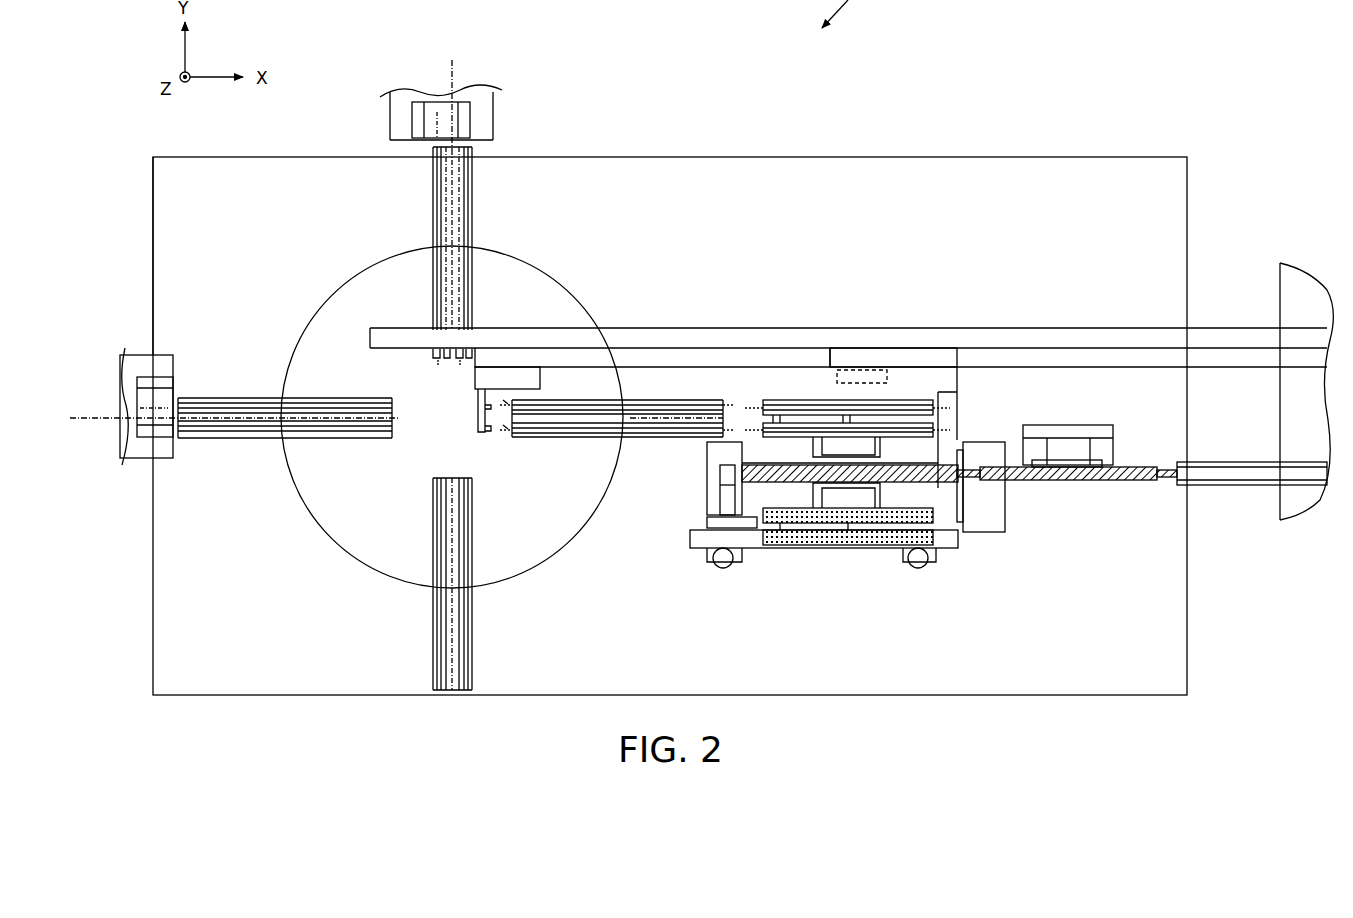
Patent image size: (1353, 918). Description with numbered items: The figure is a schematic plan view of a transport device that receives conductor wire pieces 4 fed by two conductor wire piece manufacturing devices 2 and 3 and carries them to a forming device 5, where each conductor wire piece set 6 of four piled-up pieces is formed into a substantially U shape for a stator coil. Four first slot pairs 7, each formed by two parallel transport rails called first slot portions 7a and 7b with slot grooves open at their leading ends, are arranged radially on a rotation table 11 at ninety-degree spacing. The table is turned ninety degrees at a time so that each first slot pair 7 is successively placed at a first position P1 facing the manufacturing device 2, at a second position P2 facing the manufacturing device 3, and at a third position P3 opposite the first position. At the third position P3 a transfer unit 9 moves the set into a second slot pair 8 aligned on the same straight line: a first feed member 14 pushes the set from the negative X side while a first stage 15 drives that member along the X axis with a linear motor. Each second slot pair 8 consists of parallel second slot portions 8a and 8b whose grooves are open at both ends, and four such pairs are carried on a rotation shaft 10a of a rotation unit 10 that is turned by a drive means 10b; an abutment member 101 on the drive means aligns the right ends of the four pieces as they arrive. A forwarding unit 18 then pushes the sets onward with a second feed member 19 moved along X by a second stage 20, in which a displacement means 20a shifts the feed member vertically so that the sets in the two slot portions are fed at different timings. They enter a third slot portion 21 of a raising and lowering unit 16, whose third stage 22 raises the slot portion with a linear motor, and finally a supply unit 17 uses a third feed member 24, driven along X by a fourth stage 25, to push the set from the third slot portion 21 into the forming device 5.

The conductor wire piece manufacturing device 2 is at (122, 468).
The conductor wire piece manufacturing device 3 is at (516, 100).
The conductor wire piece 4 is at (443, 120).
The forming device 5 is at (1272, 242).
The conductor wire piece set 6 is at (472, 258).
The first slot pair 7 is at (501, 256).
The first slot portion 7a is at (470, 225).
The first slot portion 7b is at (455, 192).
The second slot pair 8 is at (806, 300).
The second slot portion 8a is at (793, 400).
The second slot portion 8b is at (823, 423).
The transfer unit 9 is at (466, 410).
The rotation unit 10 is at (985, 539).
The rotation shaft 10a is at (888, 482).
The drive means 10b is at (1000, 533).
The rotation table 11 is at (324, 302).
The first feed member 14 is at (488, 408).
The first stage 15 is at (472, 375).
The raising and lowering unit 16 is at (1078, 500).
The supply unit 17 is at (977, 392).
The forwarding unit 18 is at (690, 552).
The second feed member 19 is at (718, 476).
The second stage 20 is at (700, 531).
The displacement means 20a is at (713, 520).
The third slot portion 21 is at (1047, 470).
The third stage 22 is at (1067, 440).
The third feed member 24 is at (963, 490).
The fourth stage 25 is at (900, 372).
The abutment member 101 is at (958, 512).
The first position P1 is at (98, 420).
The second position P2 is at (455, 70).
The third position P3 is at (680, 410).